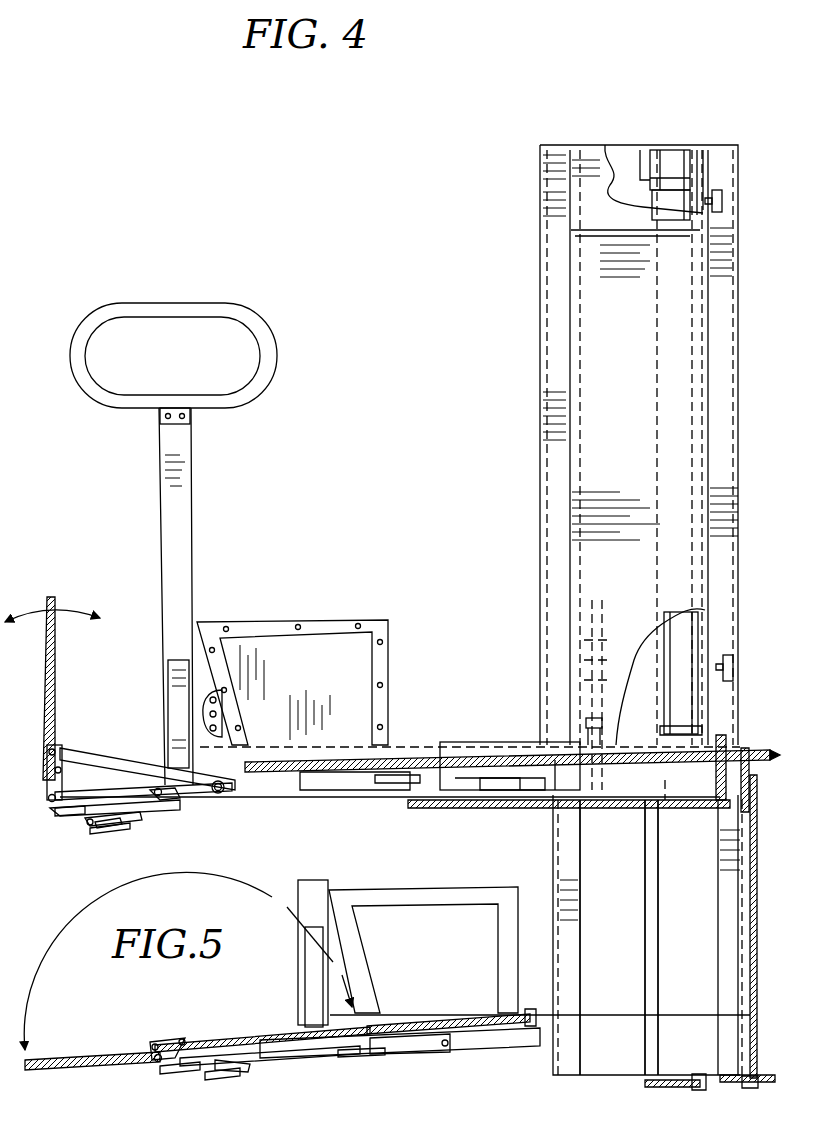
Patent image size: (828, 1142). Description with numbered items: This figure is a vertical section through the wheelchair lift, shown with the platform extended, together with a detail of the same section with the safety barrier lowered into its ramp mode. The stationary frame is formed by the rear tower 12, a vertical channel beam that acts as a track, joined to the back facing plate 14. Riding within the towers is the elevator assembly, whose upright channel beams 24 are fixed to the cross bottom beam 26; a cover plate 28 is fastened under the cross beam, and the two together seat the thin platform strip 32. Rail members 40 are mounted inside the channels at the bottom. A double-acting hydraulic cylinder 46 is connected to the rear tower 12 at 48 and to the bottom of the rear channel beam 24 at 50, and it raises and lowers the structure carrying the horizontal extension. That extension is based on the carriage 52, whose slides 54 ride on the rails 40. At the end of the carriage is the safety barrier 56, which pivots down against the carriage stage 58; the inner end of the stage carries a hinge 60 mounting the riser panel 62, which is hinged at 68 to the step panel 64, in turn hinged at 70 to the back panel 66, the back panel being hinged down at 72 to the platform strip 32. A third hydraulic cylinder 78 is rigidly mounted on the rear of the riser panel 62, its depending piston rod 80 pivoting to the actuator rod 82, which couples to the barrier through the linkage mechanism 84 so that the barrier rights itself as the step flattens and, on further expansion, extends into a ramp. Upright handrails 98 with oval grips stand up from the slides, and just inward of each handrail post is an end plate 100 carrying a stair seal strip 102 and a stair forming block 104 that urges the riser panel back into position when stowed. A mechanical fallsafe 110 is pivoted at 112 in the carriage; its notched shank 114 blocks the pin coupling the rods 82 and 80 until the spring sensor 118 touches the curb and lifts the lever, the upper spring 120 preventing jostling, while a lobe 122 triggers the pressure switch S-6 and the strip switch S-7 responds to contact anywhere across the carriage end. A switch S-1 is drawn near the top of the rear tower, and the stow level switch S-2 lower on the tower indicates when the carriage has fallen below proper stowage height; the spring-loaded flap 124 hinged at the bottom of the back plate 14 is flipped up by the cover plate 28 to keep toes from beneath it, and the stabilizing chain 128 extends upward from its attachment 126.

In FIG. 4, the rear tower 12 is at (538, 146).
In FIG. 4, the back facing plate 14 is at (748, 900).
In FIG. 4, the upright channel beams 24 is at (655, 270).
In FIG. 4, the cross bottom beam 26 is at (633, 800).
In FIG. 4, the cover plate 28 is at (505, 808).
In FIG. 4, the platform strip 32 is at (738, 752).
In FIG. 4, the rail members 40 is at (475, 750).
In FIG. 4, the double-acting hydraulic cylinder 46 is at (680, 650).
In FIG. 4, the connection to rear tower 48 is at (656, 190).
In FIG. 4, the connection to rear channel beam 50 is at (663, 800).
In FIG. 4, the carriage 52 is at (205, 618).
In FIG. 4, the slides 54 is at (428, 748).
In FIG. 4, the safety barrier 56 is at (50, 680).
In FIG. 5, the safety barrier 56 is at (54, 1060).
In FIG. 4, the carriage stage 58 is at (90, 790).
In FIG. 5, the carriage stage 58 is at (245, 1042).
In FIG. 4, the hinge 60 is at (48, 798).
In FIG. 5, the hinge 60 is at (155, 1062).
In FIG. 4, the riser panel 62 is at (340, 790).
In FIG. 5, the riser panel 62 is at (410, 1026).
In FIG. 4, the step panel 64 is at (480, 790).
In FIG. 5, the step panel 64 is at (493, 1016).
In FIG. 4, the back panel 66 is at (615, 798).
In FIG. 4, the hinge 68 is at (392, 785).
In FIG. 4, the hinge 70 is at (556, 800).
In FIG. 4, the hinge 72 is at (720, 735).
In FIG. 5, the third hydraulic cylinder 78 is at (440, 1052).
In FIG. 5, the piston rod 80 is at (355, 1058).
In FIG. 4, the actuator rod 82 is at (136, 768).
In FIG. 5, the actuator rod 82 is at (272, 1062).
In FIG. 4, the linkage mechanism 84 is at (45, 762).
In FIG. 5, the linkage mechanism 84 is at (172, 1042).
In FIG. 4, the handrails 98 is at (270, 306).
In FIG. 5, the handrails 98 is at (328, 884).
In FIG. 4, the end plate 100 is at (285, 692).
In FIG. 5, the end plate 100 is at (400, 970).
In FIG. 4, the stair seal strip 102 is at (330, 624).
In FIG. 5, the stair seal strip 102 is at (432, 895).
In FIG. 4, the stair forming block 104 is at (210, 712).
In FIG. 4, the mechanical fallsafe 110 is at (155, 808).
In FIG. 4, the pivot 112 is at (165, 796).
In FIG. 4, the notched shank 114 is at (218, 794).
In FIG. 4, the spring sensor 118 is at (112, 822).
In FIG. 4, the upper spring 120 is at (88, 826).
In FIG. 4, the lobe 122 is at (100, 830).
In FIG. 5, the lobe 122 is at (212, 1072).
In FIG. 4, the spring-loaded flap 124 is at (672, 1085).
In FIG. 4, the chain attachment 126 is at (585, 724).
In FIG. 4, the chain 128 is at (602, 632).
In FIG. 4, the switch S-1 is at (717, 190).
In FIG. 4, the stow level switch S-2 is at (733, 667).
In FIG. 4, the pressure switch S-6 is at (96, 828).
In FIG. 5, the pressure switch S-6 is at (215, 1076).
In FIG. 4, the strip switch S-7 is at (68, 812).
In FIG. 5, the strip switch S-7 is at (175, 1070).